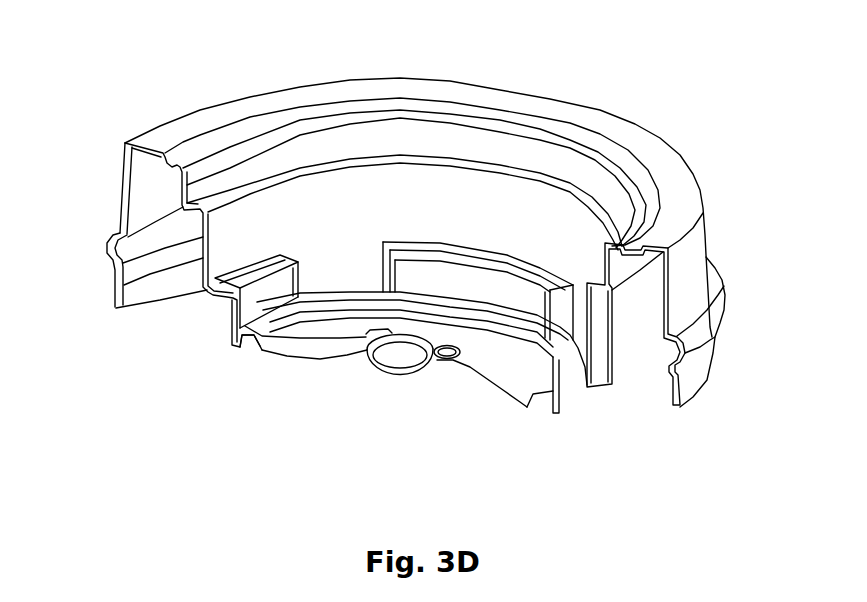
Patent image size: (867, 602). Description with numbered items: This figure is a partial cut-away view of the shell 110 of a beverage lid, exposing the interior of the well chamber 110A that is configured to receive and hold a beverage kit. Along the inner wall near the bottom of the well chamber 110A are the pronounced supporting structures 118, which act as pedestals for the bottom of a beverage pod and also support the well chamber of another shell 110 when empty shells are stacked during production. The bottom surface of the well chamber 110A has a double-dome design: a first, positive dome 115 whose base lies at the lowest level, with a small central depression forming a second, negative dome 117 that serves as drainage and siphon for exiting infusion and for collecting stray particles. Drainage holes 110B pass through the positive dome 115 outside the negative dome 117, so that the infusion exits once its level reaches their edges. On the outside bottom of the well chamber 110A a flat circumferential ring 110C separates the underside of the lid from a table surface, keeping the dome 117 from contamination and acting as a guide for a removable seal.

The shell 110 is at (128, 273).
The well chamber 110A is at (457, 219).
The drainage holes 110B is at (456, 358).
The flat circumferential ring 110C is at (229, 347).
The positive dome 115 is at (337, 345).
The negative dome 117 is at (397, 357).
The supporting structures 118 is at (527, 260).